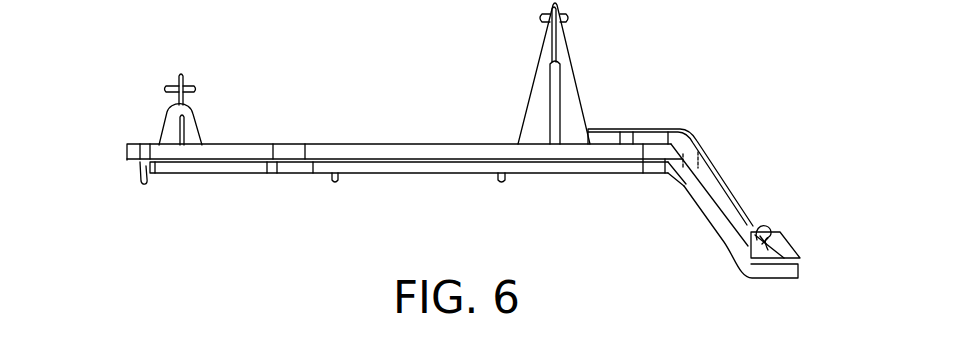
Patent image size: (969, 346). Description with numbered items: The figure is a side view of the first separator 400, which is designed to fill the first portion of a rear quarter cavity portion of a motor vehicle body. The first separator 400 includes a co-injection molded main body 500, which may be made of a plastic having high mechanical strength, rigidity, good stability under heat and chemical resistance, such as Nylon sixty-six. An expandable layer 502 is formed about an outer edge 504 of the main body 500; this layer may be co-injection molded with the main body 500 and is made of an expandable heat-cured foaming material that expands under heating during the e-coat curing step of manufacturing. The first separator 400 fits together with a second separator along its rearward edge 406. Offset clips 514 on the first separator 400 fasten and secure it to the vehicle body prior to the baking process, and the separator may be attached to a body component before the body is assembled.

The first separator 400 is at (98, 136).
The main body 500 is at (433, 167).
The offset clips 514 is at (192, 109).
The rearward edge 406 is at (818, 268).
The expandable layer 502 is at (785, 243).
The outer edge 504 is at (765, 228).